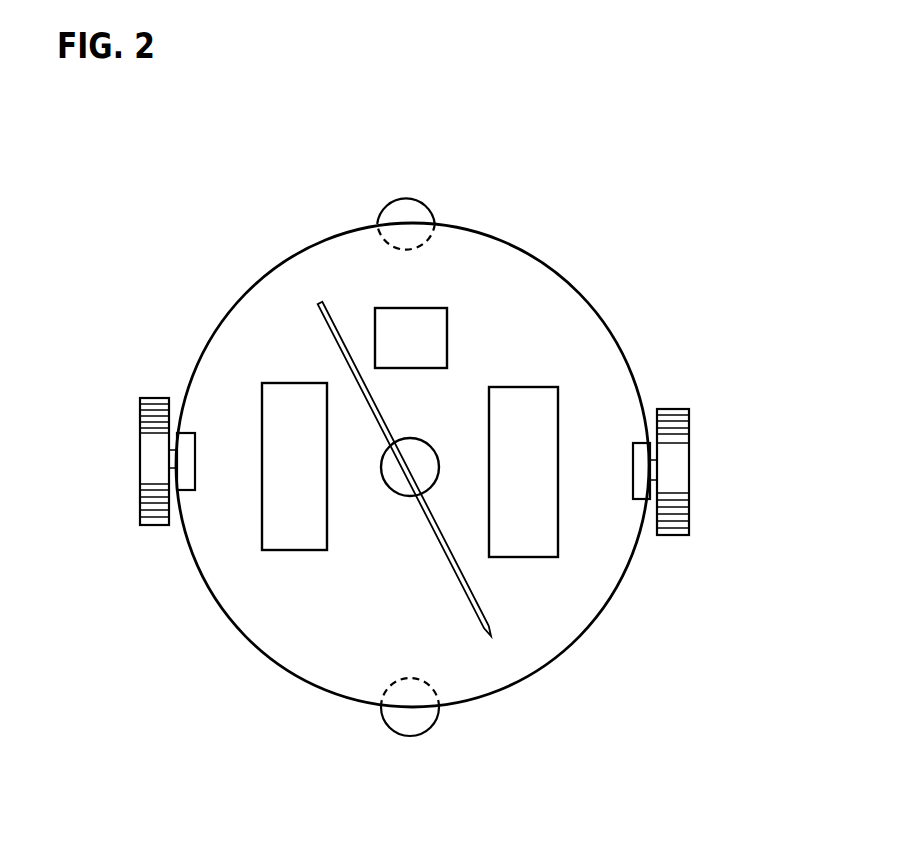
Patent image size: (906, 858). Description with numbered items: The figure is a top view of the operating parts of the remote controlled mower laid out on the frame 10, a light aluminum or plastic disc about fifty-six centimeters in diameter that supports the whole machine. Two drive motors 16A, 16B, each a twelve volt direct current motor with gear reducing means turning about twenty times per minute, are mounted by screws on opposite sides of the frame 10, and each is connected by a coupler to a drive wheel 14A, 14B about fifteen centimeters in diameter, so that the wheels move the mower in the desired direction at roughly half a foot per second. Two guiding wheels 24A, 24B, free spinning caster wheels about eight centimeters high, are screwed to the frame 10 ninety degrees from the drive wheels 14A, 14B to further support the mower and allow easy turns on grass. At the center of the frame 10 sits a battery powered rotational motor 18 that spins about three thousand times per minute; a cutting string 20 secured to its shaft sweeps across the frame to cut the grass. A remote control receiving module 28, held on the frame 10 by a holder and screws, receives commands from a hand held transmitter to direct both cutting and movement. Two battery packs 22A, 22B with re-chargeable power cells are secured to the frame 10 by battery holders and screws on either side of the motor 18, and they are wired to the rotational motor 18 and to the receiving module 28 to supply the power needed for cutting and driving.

The frame 10 is at (498, 240).
The drive wheel 14A is at (140, 422).
The drive wheel 14B is at (690, 442).
The drive motor 16A is at (183, 433).
The drive motor 16B is at (645, 437).
The rotational motor 18 is at (394, 496).
The cutting string 20 is at (313, 313).
The battery pack 22A is at (262, 550).
The battery pack 22B is at (558, 557).
The guiding wheel 24A is at (430, 203).
The guiding wheel 24B is at (437, 718).
The remote control receiving module 28 is at (454, 335).